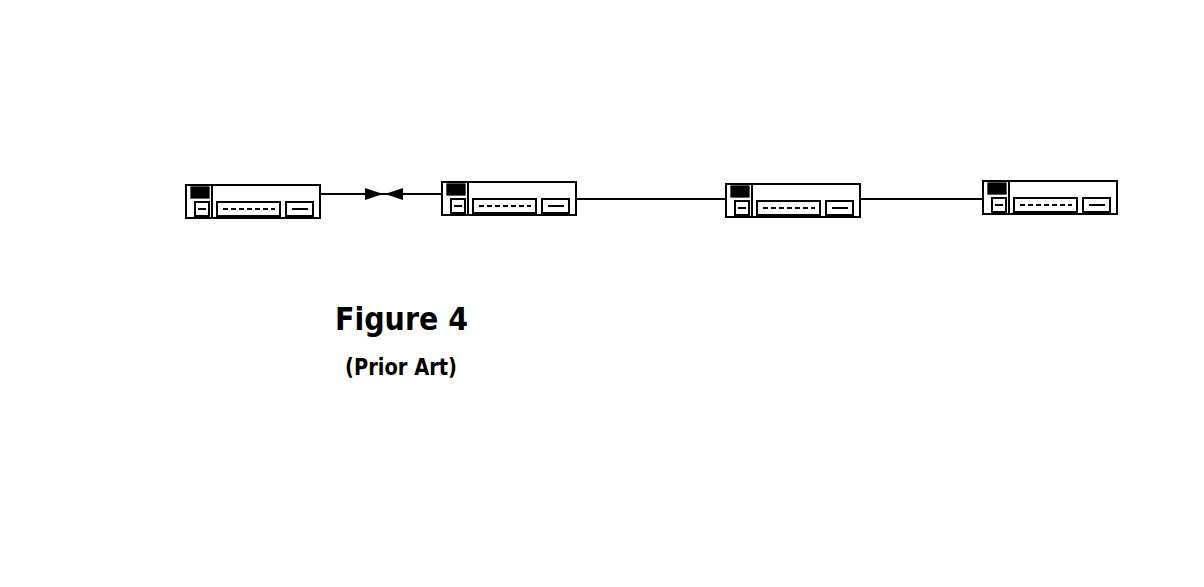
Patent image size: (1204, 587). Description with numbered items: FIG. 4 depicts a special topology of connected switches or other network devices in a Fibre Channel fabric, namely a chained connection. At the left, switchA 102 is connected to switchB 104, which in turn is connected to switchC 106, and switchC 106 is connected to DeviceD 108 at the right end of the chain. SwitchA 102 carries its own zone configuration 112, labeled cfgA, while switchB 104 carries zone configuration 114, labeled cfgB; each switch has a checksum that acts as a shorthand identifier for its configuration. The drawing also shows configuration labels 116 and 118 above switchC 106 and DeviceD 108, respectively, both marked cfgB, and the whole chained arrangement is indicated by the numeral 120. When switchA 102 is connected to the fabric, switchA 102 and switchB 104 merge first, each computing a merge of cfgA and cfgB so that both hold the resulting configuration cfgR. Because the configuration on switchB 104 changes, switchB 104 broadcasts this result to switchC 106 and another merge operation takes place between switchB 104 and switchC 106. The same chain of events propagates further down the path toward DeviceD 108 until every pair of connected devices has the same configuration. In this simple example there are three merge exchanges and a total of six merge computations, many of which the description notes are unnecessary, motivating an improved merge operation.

The switchA 102 is at (252, 220).
The switchB 104 is at (497, 217).
The switchC 106 is at (767, 219).
The DeviceD 108 is at (1020, 215).
The zone configuration cfgA 112 is at (318, 172).
The zone configuration cfgB 114 is at (553, 164).
The configuration B of Switch C 116 is at (827, 175).
The configuration B of Device D 118 is at (1087, 163).
The prior art network 120 is at (325, 93).